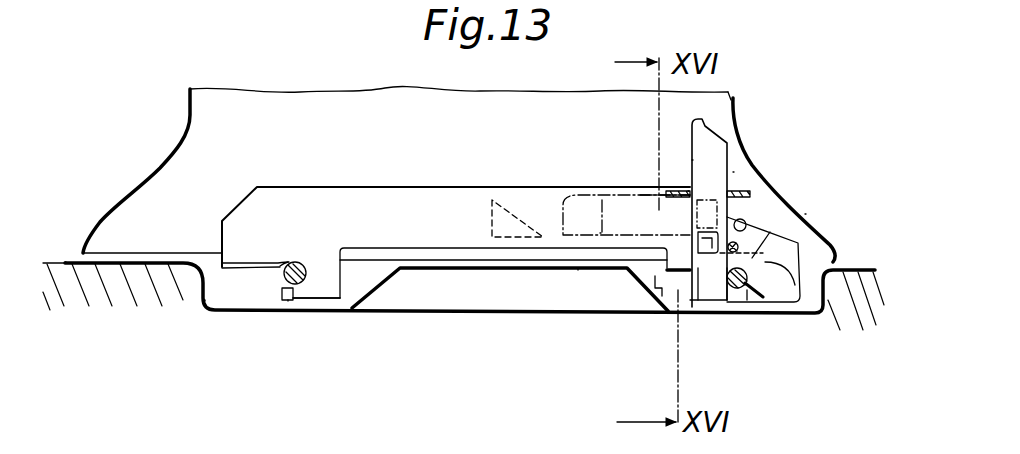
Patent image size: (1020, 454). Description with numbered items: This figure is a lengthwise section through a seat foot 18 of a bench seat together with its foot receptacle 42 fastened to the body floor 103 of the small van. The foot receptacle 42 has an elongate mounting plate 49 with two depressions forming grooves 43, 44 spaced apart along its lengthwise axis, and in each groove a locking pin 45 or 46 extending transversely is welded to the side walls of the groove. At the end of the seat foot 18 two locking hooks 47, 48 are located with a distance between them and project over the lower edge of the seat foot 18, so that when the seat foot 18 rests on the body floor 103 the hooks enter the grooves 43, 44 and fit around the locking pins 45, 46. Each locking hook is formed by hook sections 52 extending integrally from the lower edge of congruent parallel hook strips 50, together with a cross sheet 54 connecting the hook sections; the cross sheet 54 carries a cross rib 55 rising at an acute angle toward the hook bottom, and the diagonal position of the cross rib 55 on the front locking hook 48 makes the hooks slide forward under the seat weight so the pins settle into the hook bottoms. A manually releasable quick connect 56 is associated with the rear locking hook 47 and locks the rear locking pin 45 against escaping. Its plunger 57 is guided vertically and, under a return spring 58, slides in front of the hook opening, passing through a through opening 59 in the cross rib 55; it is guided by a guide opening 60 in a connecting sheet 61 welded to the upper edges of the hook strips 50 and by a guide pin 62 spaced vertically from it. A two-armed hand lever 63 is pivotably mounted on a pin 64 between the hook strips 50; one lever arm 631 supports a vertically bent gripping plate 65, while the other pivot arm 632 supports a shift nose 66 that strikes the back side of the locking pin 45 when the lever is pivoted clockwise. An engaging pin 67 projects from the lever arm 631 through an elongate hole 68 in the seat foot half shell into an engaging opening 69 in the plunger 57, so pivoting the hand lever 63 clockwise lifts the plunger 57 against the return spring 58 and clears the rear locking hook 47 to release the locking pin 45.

The seat foot 18 is at (324, 88).
The mounting plate 49 is at (77, 262).
The hook strip 50 is at (405, 230).
The cross sheet 54 is at (308, 263).
The cross rib 55 is at (263, 262).
The body floor 103 is at (120, 284).
The foot receptacle 42 is at (186, 284).
The groove 44 is at (221, 292).
The locking pin 46 is at (278, 286).
The front locking hook 48 is at (291, 294).
The hook section 52 is at (316, 292).
The groove 43 is at (642, 318).
The plunger 57 is at (726, 128).
The through opening 59 is at (698, 313).
The quick connect 56 is at (734, 104).
The shift nose 66 is at (824, 318).
The rear locking hook 47 is at (790, 313).
The locking pin 45 is at (750, 300).
The pin 64 is at (805, 167).
The engaging pin 67 is at (760, 205).
The guide pin 62 is at (775, 225).
The pivot arm 632 is at (805, 214).
The elongate hole 68 is at (733, 170).
The engaging opening 69 is at (687, 225).
The hand lever 63 is at (585, 226).
The lever arm 631 is at (600, 200).
The guide opening 60 is at (687, 187).
The connecting sheet 61 is at (687, 192).
The return spring 58 is at (686, 156).
The gripping plate 65 is at (577, 273).